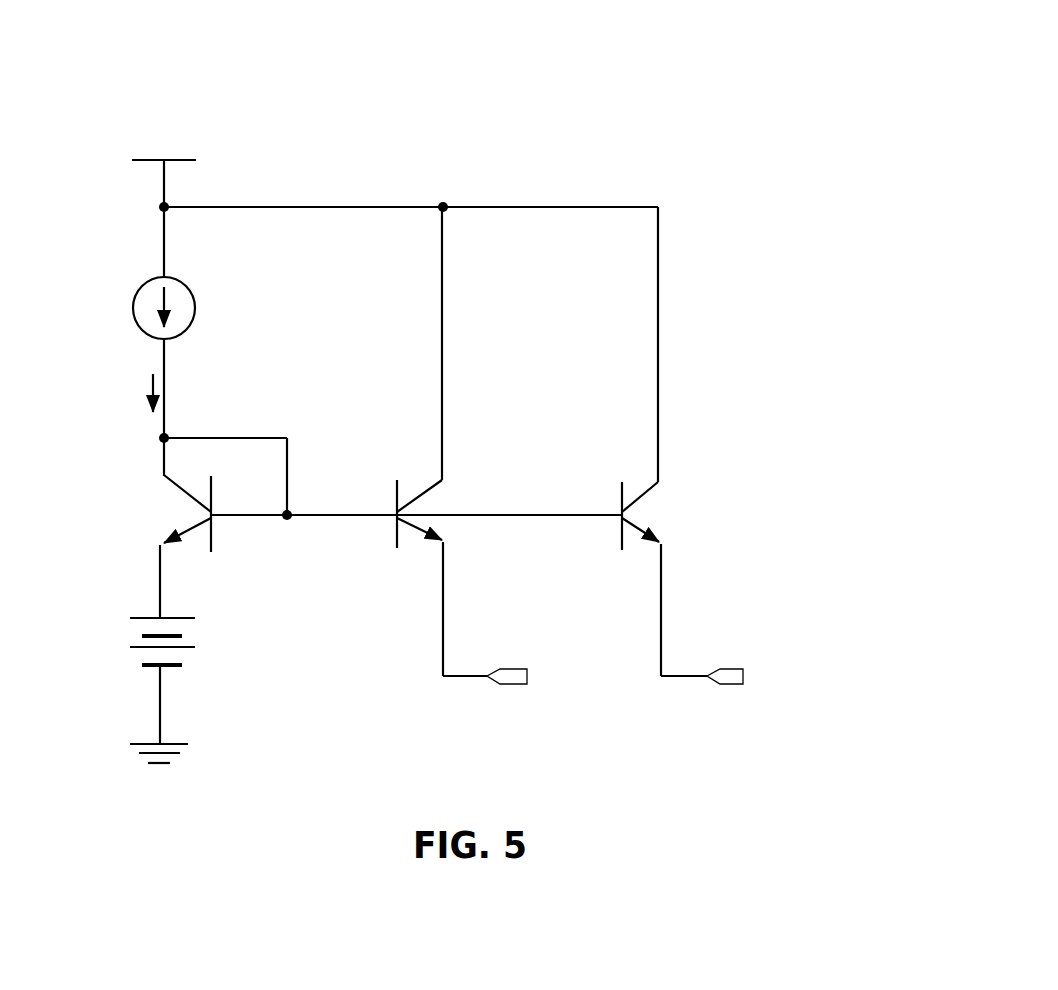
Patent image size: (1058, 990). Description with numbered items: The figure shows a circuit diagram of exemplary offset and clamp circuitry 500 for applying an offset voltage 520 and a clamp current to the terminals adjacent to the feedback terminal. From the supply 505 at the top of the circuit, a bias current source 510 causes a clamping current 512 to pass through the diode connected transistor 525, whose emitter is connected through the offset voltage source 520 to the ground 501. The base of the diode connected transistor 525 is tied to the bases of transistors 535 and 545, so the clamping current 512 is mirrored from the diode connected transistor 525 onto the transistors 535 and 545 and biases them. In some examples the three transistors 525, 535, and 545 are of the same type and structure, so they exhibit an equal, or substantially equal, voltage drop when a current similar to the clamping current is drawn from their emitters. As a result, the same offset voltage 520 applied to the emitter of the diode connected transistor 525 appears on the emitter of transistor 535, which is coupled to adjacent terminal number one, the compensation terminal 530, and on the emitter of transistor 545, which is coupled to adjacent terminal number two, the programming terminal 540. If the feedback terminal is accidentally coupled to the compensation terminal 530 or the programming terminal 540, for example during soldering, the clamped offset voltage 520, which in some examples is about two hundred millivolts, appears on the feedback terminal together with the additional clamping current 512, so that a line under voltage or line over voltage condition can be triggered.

The offset and clamp circuitry 500 is at (700, 42).
The ground 501 is at (138, 769).
The supply VDD 505 is at (173, 145).
The bias current source Ibias2 510 is at (200, 310).
The clamping current Ibias2 512 is at (147, 400).
The offset voltage Voffset 520 is at (197, 653).
The diode connected transistor 525 is at (167, 510).
The compensation terminal CP 530 is at (507, 695).
The transistor 535 is at (447, 495).
The programming terminal PD 540 is at (715, 690).
The transistor 545 is at (650, 517).